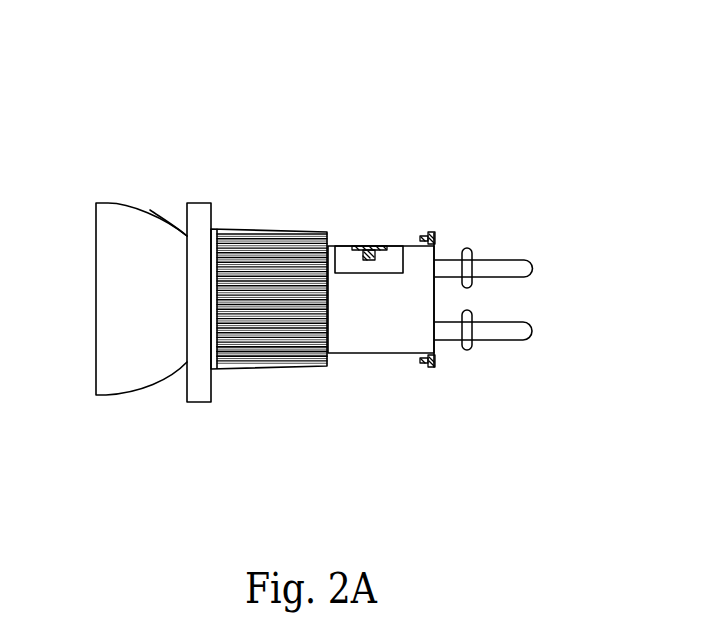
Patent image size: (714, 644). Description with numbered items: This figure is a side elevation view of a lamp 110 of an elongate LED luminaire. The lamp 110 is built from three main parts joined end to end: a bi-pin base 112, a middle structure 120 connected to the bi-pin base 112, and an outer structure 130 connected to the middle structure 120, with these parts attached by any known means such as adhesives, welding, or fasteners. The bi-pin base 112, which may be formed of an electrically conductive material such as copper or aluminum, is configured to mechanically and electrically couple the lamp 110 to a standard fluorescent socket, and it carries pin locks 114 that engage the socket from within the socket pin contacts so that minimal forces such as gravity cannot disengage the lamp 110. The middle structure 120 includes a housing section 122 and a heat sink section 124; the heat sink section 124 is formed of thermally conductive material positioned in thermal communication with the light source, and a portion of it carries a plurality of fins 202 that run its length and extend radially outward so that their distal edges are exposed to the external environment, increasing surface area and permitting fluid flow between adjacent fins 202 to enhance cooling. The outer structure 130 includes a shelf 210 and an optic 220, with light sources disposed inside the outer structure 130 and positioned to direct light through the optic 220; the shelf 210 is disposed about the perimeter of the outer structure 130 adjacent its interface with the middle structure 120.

The lamp 110 is at (110, 66).
The bi-pin base 112 is at (535, 268).
The pin locks 114 is at (470, 283).
The middle structure 120 is at (333, 245).
The housing section 122 is at (410, 245).
The heat sink section 124 is at (272, 228).
The outer structure 130 is at (168, 230).
The fins 202 is at (275, 357).
The shelf 210 is at (205, 403).
The optic 220 is at (125, 395).